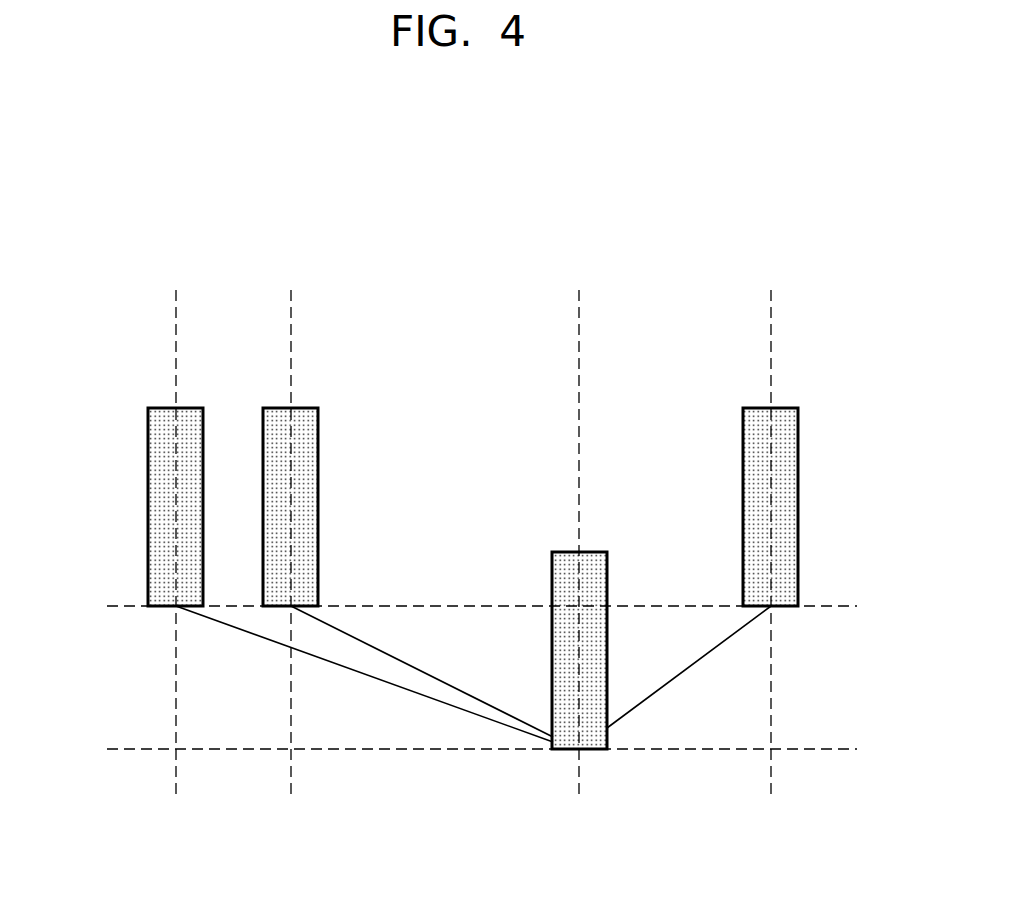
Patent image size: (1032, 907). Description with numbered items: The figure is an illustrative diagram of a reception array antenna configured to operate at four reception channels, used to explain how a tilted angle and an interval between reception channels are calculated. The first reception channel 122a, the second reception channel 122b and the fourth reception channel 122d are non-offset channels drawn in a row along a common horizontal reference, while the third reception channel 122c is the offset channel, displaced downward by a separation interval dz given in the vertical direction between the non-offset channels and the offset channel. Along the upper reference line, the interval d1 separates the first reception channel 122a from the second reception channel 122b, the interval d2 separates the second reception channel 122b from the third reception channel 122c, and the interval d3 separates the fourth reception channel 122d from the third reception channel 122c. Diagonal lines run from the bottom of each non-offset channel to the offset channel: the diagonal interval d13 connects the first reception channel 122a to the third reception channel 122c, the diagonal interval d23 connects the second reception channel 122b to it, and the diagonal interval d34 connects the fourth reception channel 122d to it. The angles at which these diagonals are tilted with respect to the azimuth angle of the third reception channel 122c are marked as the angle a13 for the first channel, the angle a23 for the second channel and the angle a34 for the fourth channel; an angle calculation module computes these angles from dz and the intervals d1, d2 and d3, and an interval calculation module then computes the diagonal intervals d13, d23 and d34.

The first reception channel 122a is at (148, 478).
The second reception channel 122b is at (318, 478).
The third reception channel 122c is at (593, 550).
The fourth reception channel 122d is at (798, 478).
The interval between first and second reception channels d1 is at (291, 367).
The interval between second and third reception channels d2 is at (579, 367).
The interval between fourth and third reception channels d3 is at (771, 367).
The vertical separation interval dz is at (826, 606).
The diagonal interval between first and third reception channels d13 is at (238, 636).
The diagonal interval between second and third reception channels d23 is at (353, 628).
The diagonal interval between fourth and third reception channels d34 is at (701, 648).
The tilt angle of first reception channel a13 is at (283, 608).
The tilt angle of second reception channel a23 is at (398, 608).
The tilt angle of fourth reception channel a34 is at (652, 697).